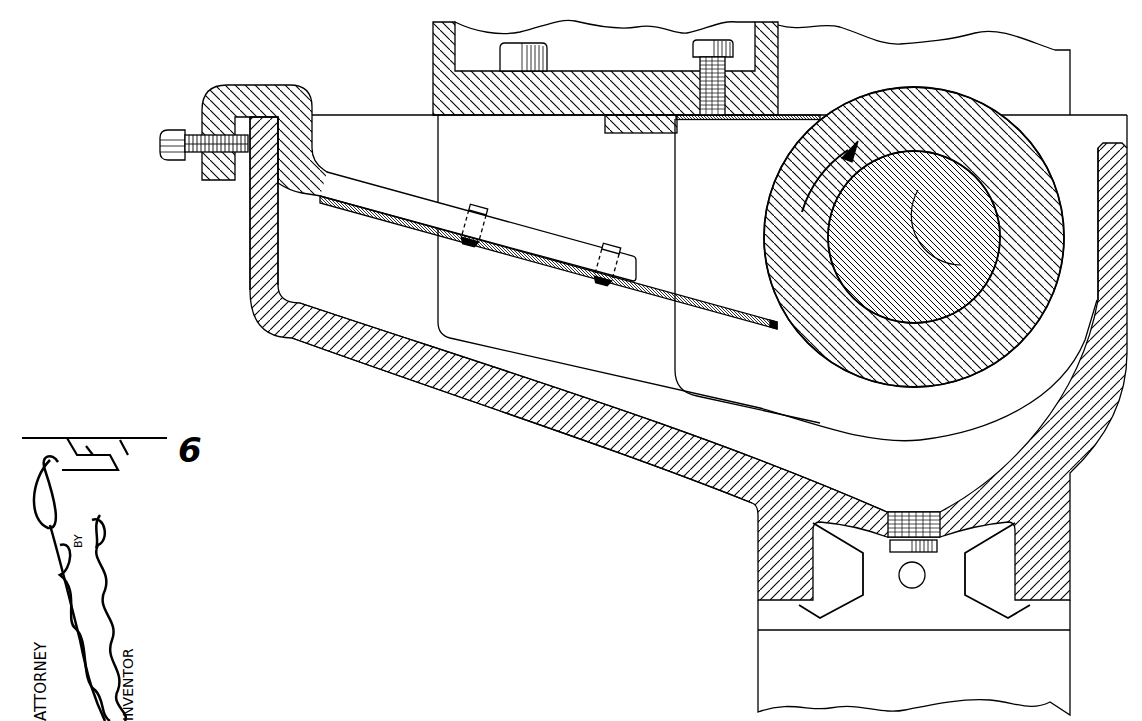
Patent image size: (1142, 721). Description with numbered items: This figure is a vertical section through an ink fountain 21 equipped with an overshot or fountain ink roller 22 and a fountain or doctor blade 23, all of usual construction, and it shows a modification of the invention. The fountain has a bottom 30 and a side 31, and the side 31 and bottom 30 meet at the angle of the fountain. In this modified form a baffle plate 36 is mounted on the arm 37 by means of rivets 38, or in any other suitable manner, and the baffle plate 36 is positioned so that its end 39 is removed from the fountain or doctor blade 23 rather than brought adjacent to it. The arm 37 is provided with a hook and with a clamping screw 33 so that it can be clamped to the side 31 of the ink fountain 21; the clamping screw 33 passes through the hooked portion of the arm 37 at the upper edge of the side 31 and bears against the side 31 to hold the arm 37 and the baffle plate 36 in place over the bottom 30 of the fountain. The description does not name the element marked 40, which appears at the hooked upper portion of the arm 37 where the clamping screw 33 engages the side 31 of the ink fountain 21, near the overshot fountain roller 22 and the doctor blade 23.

The ink fountain 21 is at (387, 371).
The overshot fountain ink roller 22 is at (967, 96).
The fountain or doctor blade 23 is at (798, 115).
The bottom 30 is at (550, 393).
The side 31 is at (275, 228).
The clamping screw 33 is at (174, 158).
The baffle plate 36 is at (660, 298).
The arm 37 is at (420, 168).
The rivets 38 is at (481, 212).
The end of the baffle plate 39 is at (774, 330).
The flange 40 is at (212, 106).